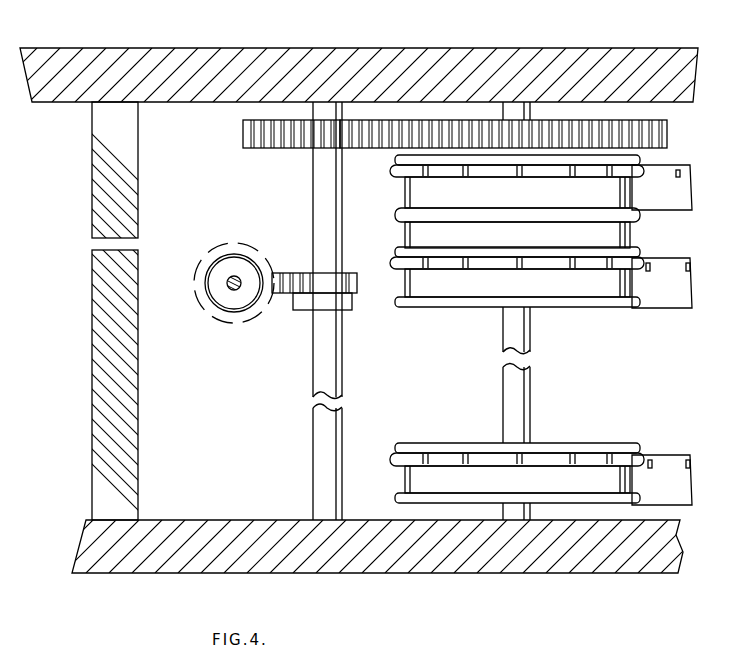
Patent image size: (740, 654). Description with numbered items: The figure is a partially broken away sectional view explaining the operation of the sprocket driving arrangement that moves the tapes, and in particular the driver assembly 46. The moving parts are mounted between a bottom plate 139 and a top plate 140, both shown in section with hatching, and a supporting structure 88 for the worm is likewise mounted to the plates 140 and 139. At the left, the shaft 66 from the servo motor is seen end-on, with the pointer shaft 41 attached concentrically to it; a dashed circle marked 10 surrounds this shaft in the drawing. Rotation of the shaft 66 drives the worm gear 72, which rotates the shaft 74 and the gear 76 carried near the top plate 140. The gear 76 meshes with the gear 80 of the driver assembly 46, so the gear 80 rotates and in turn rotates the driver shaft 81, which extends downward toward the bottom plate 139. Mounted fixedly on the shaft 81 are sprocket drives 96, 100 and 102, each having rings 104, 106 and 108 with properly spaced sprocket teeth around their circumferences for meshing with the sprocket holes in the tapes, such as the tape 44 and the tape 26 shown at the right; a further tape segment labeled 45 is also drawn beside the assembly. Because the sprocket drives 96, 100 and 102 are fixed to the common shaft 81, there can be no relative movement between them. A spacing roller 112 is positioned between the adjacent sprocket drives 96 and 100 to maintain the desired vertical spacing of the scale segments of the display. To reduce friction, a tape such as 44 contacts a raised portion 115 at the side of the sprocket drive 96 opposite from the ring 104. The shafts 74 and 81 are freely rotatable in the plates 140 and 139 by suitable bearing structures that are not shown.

The frame outline 10 is at (198, 307).
The tape 26 is at (648, 475).
The pointer shaft 41 is at (240, 294).
The tape 44 is at (655, 192).
The support plate 45 is at (652, 285).
The driver assembly 46 is at (363, 58).
The shaft 66 is at (227, 265).
The worm gear 72 is at (300, 281).
The shaft 74 is at (322, 173).
The gear 76 is at (264, 121).
The gear 80 is at (615, 135).
The driver shaft 81 is at (508, 383).
The structure 88 is at (108, 461).
The sprocket drive 96 is at (597, 190).
The sprocket drive 100 is at (590, 282).
The sprocket drive 102 is at (572, 480).
The ring 104 is at (440, 172).
The ring 106 is at (455, 228).
The ring 108 is at (442, 465).
The spacing roller 112 is at (445, 266).
The raised portion 115 is at (637, 215).
The bottom plate 139 is at (493, 550).
The top plate 140 is at (533, 76).